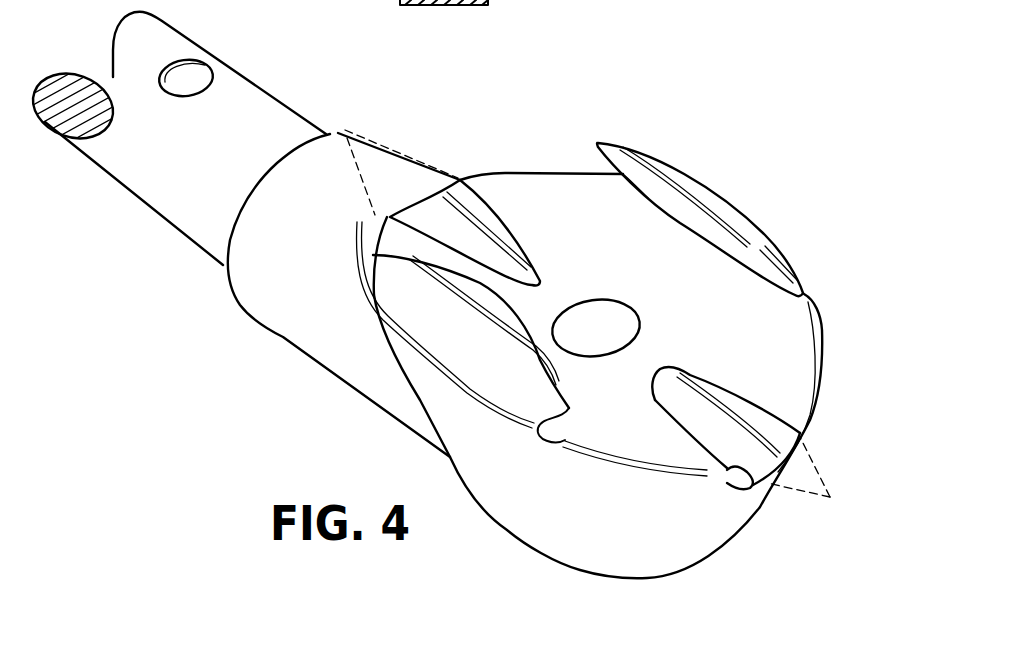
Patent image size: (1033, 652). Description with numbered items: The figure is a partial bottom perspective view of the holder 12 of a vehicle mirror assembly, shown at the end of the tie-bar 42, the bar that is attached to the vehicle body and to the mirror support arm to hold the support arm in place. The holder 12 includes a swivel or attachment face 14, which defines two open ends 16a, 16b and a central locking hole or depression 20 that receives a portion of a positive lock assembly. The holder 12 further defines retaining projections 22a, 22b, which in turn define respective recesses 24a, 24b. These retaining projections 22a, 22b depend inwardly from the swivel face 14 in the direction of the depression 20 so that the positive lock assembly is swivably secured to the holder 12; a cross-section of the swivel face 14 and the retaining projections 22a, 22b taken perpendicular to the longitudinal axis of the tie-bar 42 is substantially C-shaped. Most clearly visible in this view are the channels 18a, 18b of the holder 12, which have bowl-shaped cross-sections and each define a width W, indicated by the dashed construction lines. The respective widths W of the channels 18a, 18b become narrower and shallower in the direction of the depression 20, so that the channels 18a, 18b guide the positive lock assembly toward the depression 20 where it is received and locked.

The holder 12 is at (746, 191).
The swivel face 14 is at (576, 179).
The open end 16a is at (783, 330).
The open end 16b is at (505, 175).
The channel 18a is at (750, 487).
The channel 18b is at (387, 217).
The depression 20 is at (640, 321).
The retaining projection 22a is at (692, 188).
The retaining projection 22b is at (384, 329).
The recess 24a is at (645, 198).
The recess 24b is at (546, 442).
The tie-bar 42 is at (231, 80).
The width W is at (592, 313).